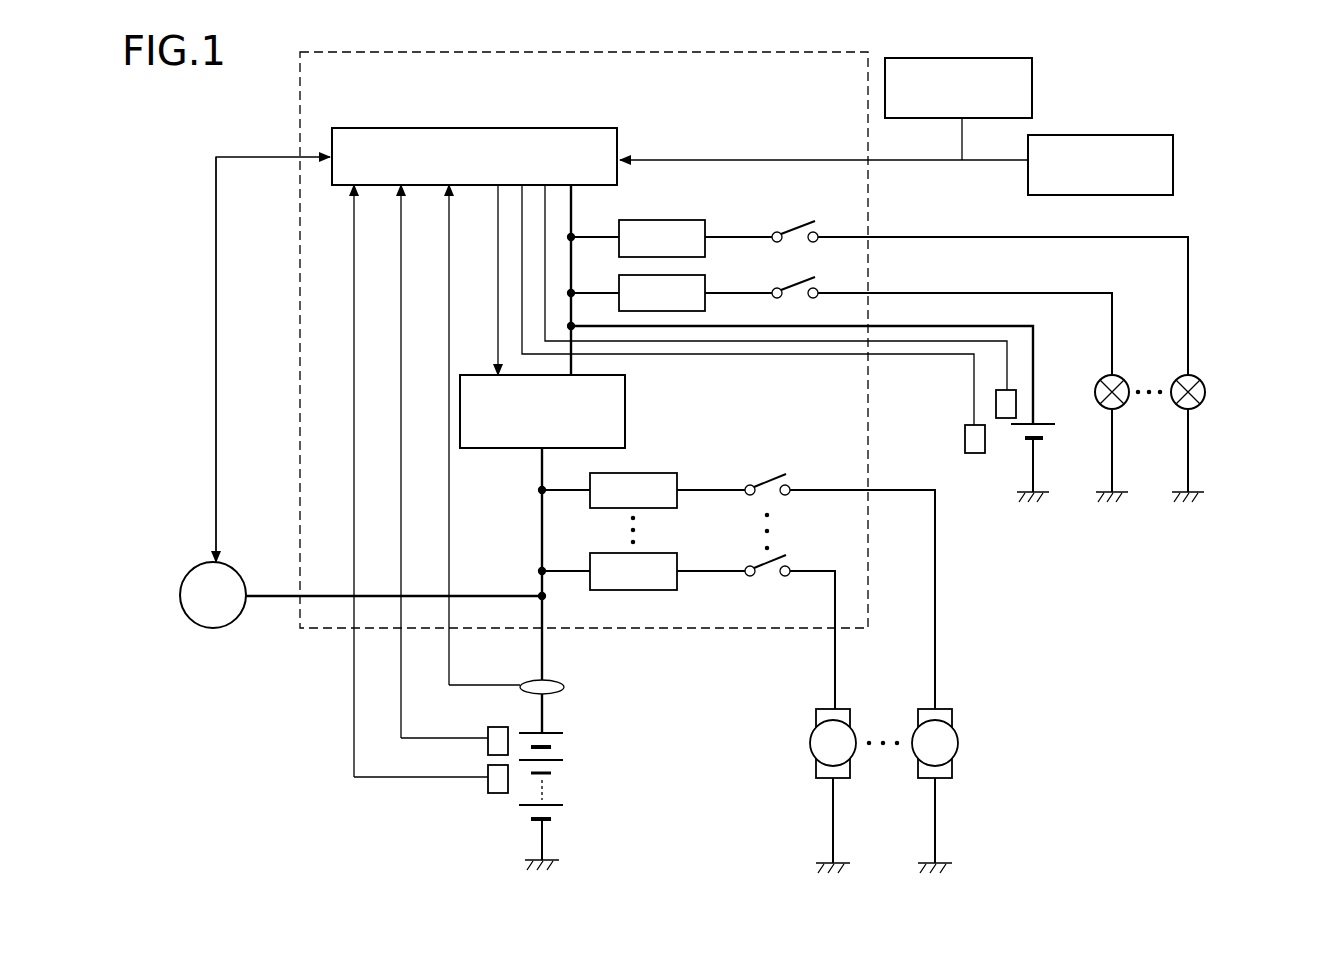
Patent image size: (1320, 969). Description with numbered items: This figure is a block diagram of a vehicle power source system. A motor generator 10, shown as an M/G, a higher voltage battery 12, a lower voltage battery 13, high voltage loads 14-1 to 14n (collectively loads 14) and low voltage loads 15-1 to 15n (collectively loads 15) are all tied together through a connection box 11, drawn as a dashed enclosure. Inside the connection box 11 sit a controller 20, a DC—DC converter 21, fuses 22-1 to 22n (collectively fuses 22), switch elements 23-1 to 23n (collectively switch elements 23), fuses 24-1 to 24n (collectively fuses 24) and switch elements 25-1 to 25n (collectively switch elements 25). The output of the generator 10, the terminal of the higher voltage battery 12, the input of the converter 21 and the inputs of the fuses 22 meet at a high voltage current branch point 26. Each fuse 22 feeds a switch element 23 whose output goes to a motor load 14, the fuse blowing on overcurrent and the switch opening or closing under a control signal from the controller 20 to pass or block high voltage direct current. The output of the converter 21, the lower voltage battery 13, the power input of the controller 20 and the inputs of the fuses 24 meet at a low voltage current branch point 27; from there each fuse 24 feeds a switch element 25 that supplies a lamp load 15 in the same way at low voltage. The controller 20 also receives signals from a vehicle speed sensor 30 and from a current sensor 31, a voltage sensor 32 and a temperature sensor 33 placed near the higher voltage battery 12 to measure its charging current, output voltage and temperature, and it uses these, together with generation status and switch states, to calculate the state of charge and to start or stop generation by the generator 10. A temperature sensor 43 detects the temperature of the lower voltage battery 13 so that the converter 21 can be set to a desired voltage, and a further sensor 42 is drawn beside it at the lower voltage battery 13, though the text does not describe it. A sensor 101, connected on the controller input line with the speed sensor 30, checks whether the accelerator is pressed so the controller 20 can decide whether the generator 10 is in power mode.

The motor generator 10 is at (213, 630).
The connection box 11 is at (300, 126).
The higher voltage battery 12 is at (568, 812).
The lower voltage battery 13 is at (1028, 446).
The high voltage load 14 is at (930, 791).
The high voltage load 14-1 is at (848, 780).
The high voltage load 14n is at (952, 780).
The low voltage load 15 is at (1201, 438).
The low voltage load 15-1 is at (1116, 412).
The low voltage load 15n is at (1200, 410).
The controller 20 is at (462, 128).
The DC-DC converter 21 is at (626, 418).
The fuses 22 is at (663, 564).
The fuse 22-1 is at (640, 473).
The fuse 22n is at (670, 590).
The switch elements 23 is at (742, 552).
The switch element 23-1 is at (763, 480).
The switch element 23n is at (746, 566).
The fuses 24 is at (699, 206).
The fuse 24-1 is at (700, 275).
The fuse 24n is at (690, 220).
The switch elements 25 is at (853, 200).
The switch element 25-1 is at (818, 288).
The switch element 25n is at (816, 230).
The high voltage current branch point 26 is at (540, 594).
The low voltage current branch point 27 is at (574, 328).
The speed sensor 30 is at (1174, 164).
The current sensor 31 is at (536, 680).
The voltage sensor 32 is at (488, 728).
The temperature sensor 33 is at (488, 793).
The voltage sensor 42 is at (965, 440).
The temperature sensor 43 is at (996, 404).
The sensor 101 is at (1033, 78).